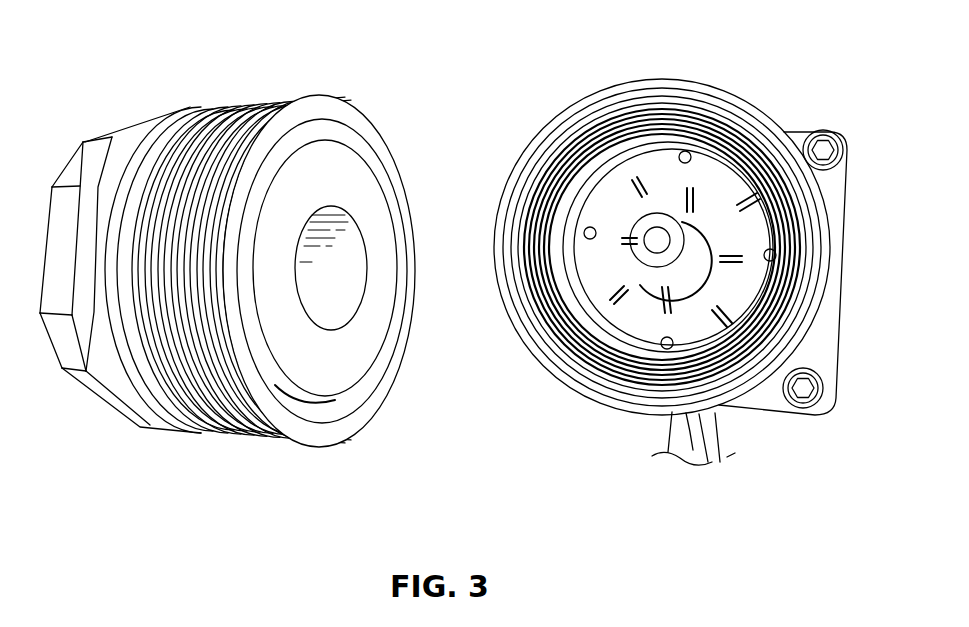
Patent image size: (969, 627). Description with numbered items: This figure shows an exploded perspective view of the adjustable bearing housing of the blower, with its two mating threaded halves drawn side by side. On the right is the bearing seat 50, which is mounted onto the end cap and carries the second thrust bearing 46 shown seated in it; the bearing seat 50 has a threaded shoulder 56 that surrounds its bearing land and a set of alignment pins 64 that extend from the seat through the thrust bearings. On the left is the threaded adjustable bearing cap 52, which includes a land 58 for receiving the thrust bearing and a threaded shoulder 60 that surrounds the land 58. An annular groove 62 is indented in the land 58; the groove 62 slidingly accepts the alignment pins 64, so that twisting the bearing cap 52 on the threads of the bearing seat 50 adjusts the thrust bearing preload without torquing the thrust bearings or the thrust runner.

The thrust bearing 46 is at (640, 183).
The bearing seat 50 is at (752, 108).
The adjustable bearing cap 52 is at (108, 66).
The threaded shoulder 56 is at (685, 113).
The land 58 is at (358, 185).
The threaded shoulder 60 is at (215, 425).
The annular groove 62 is at (310, 405).
The alignment pins 64 is at (775, 257).